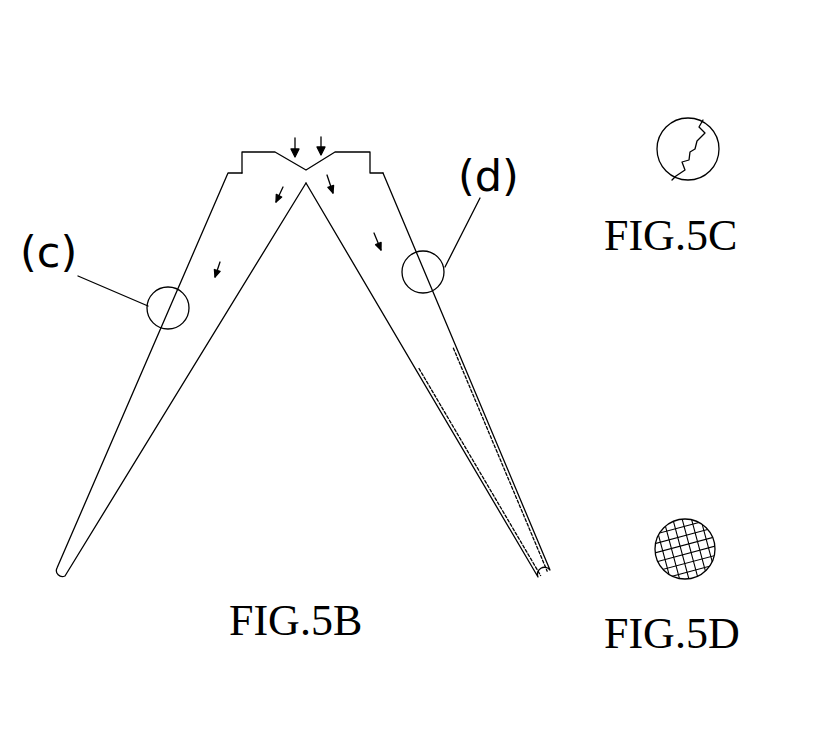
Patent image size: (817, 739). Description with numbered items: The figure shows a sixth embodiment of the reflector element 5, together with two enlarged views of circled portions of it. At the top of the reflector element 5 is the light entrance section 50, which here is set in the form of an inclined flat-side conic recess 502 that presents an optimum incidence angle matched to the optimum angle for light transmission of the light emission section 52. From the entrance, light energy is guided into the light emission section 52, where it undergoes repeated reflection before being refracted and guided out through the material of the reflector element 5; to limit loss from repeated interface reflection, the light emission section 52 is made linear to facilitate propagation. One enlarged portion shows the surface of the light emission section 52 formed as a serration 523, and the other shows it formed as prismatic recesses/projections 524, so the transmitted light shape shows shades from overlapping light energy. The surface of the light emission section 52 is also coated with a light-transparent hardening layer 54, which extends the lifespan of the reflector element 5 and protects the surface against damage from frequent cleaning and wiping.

In FIG. 5B, the reflector element 5 is at (167, 217).
In FIG. 5B, the light entrance section 50 is at (290, 155).
In FIG. 5B, the inclined flat-side conic recess 502 is at (281, 107).
In FIG. 5B, the light emission section 52 is at (152, 408).
In FIG. 5B, the light-transparent hardening layer 54 is at (502, 458).
In FIG. 5C, the serration 523 is at (692, 150).
In FIG. 5D, the prismatic recesses/projections 524 is at (683, 548).